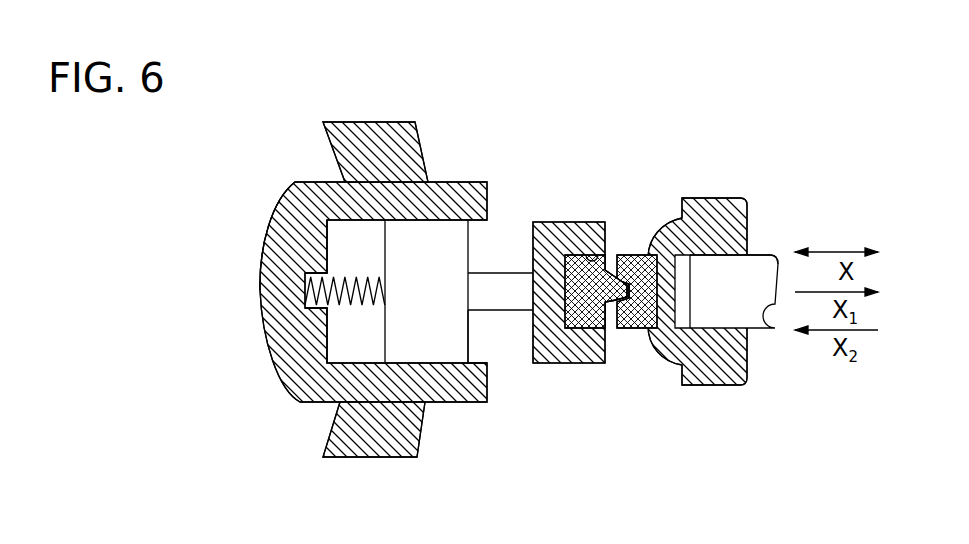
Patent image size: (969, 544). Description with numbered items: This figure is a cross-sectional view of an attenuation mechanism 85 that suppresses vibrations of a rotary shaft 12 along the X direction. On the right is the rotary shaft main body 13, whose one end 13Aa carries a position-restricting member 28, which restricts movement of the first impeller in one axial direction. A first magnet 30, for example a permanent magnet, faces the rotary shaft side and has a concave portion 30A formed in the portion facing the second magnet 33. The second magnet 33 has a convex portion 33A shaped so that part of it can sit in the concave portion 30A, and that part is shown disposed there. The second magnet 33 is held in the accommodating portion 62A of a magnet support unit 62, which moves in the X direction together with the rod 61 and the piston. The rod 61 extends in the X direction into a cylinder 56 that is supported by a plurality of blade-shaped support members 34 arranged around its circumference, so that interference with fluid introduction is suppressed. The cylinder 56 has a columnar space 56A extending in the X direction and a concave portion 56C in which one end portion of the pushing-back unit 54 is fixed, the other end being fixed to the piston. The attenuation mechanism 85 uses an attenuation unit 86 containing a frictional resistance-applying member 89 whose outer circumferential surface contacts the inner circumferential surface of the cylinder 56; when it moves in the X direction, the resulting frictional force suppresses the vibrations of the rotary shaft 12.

The rotary shaft 12 is at (726, 291).
The rotary shaft main body 13 is at (776, 306).
The one end 13Aa is at (712, 265).
The position-restricting member 28 is at (665, 223).
The first magnet 30 is at (633, 250).
The concave portion 30A is at (637, 302).
The second magnet 33 is at (578, 330).
The convex portion 33A is at (611, 302).
The support members 34 is at (370, 135).
The pushing-back unit 54 is at (307, 302).
The cylinder 56 is at (301, 383).
The space 56A is at (345, 345).
The concave portion 56C is at (333, 268).
The rod 61 is at (502, 292).
The magnet support unit 62 is at (550, 218).
The accommodating portion 62A is at (593, 258).
The attenuation mechanism 85 is at (262, 248).
The attenuation unit 86 is at (487, 325).
The frictional resistance-applying member 89 is at (432, 265).